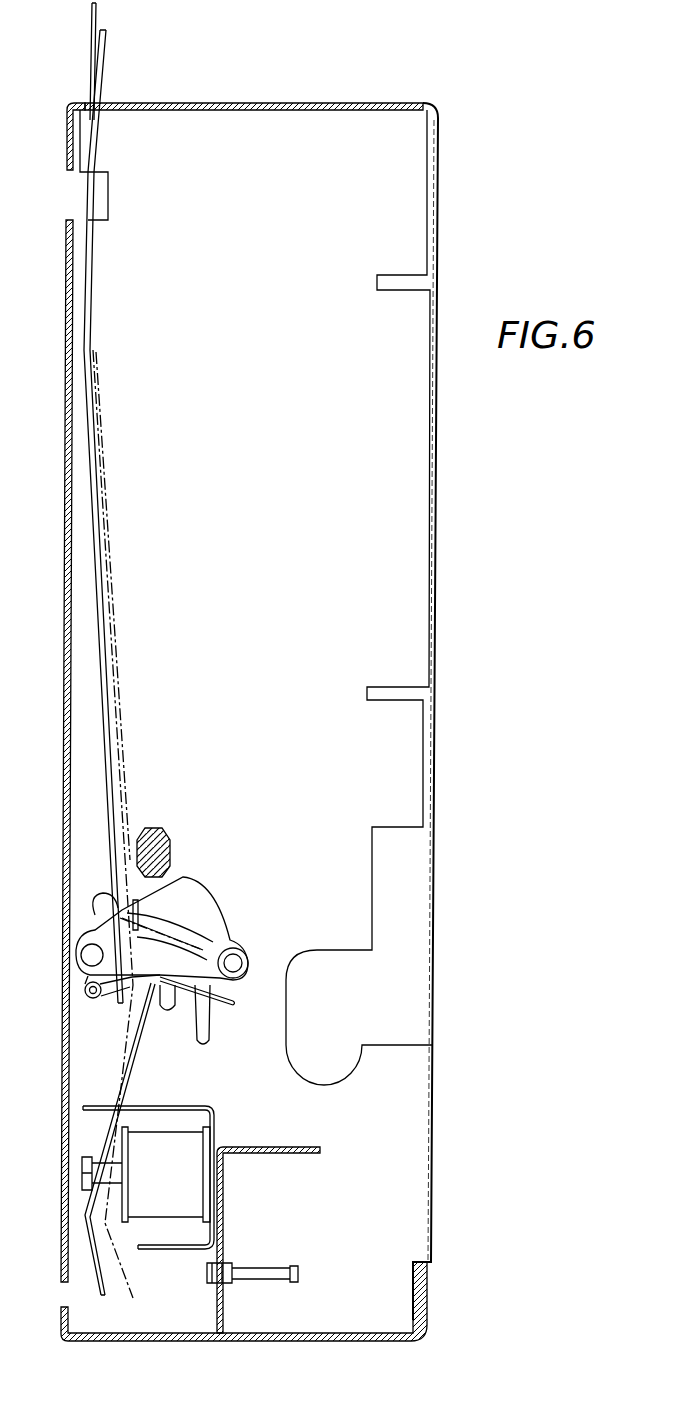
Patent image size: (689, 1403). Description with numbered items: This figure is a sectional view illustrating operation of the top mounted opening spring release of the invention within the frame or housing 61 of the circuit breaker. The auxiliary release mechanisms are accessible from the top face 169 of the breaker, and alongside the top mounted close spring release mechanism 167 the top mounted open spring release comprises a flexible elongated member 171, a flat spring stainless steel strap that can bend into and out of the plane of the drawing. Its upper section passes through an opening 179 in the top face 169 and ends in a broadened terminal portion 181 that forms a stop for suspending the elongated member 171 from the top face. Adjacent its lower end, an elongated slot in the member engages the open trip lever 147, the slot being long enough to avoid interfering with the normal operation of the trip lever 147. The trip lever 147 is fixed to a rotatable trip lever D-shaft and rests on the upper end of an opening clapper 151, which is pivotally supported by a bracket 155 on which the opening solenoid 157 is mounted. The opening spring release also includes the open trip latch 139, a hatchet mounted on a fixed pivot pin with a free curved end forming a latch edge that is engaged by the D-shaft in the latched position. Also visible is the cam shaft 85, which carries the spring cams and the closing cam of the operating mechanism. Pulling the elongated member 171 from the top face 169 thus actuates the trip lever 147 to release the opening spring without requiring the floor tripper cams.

The frame or housing 61 is at (67, 519).
The cam shaft 85 is at (162, 830).
The open trip latch 139 is at (195, 888).
The trip lever 147 is at (85, 994).
The opening clapper 151 is at (92, 1253).
The bracket 155 is at (215, 1126).
The opening solenoid 157 is at (190, 1198).
The top mounted close spring release mechanism 167 is at (116, 87).
The top face 169 is at (300, 104).
The flexible elongated member 171 is at (108, 700).
The opening 179 is at (118, 111).
The broadened terminal portion 181 is at (98, 58).